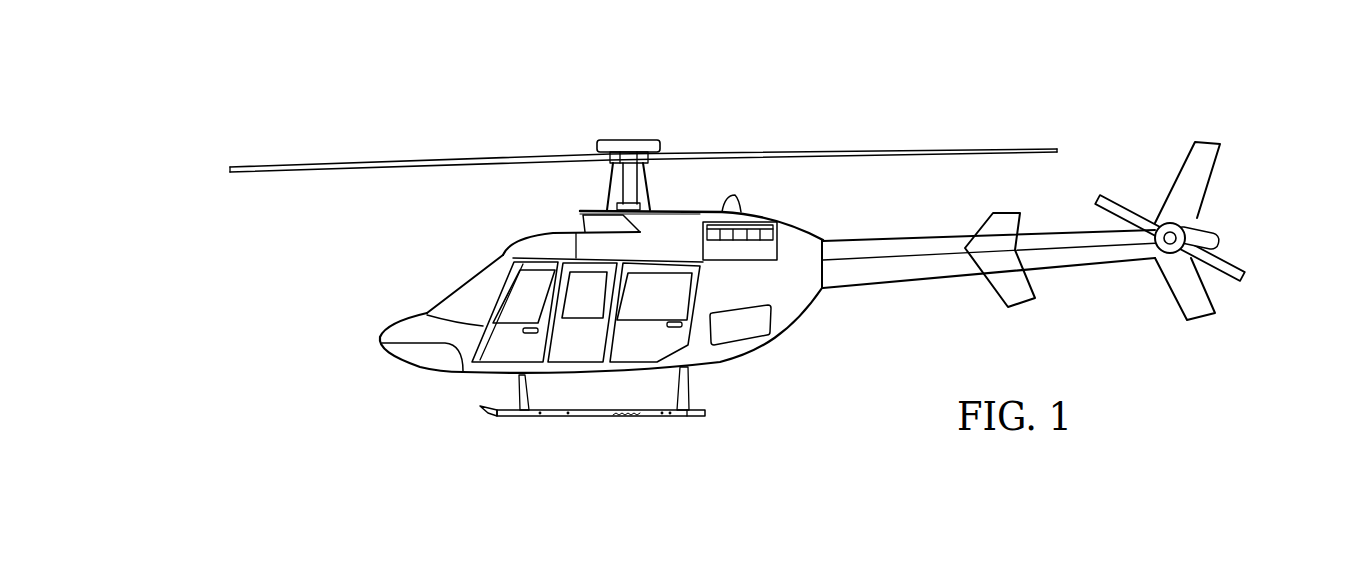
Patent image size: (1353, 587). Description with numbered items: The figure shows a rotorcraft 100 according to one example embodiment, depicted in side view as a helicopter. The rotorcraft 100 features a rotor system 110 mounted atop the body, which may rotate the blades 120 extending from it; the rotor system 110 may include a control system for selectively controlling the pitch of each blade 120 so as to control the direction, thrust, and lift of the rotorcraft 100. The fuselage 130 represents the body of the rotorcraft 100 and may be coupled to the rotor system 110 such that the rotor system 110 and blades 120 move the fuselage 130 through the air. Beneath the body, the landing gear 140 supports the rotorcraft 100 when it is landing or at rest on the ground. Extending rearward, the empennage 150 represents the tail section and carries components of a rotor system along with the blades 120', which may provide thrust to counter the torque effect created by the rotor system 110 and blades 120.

The rotorcraft 100 is at (625, 284).
The rotor system 110 is at (628, 140).
The blades 120 is at (643, 132).
The blades 120' is at (1211, 239).
The fuselage 130 is at (423, 372).
The landing gear 140 is at (573, 418).
The empennage 150 is at (903, 284).